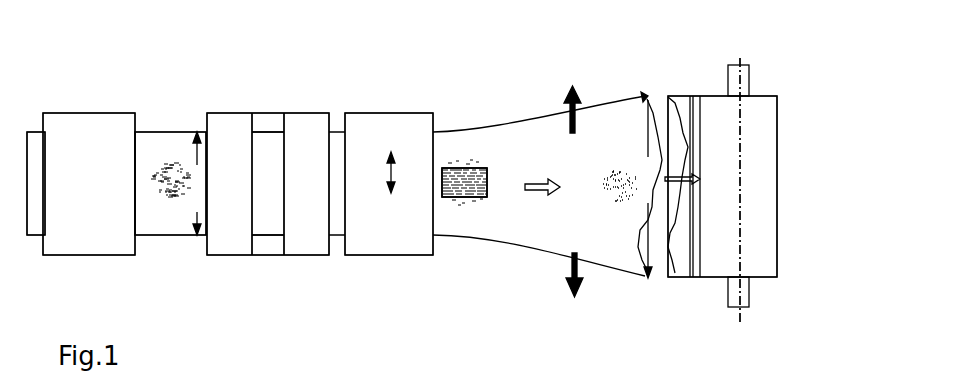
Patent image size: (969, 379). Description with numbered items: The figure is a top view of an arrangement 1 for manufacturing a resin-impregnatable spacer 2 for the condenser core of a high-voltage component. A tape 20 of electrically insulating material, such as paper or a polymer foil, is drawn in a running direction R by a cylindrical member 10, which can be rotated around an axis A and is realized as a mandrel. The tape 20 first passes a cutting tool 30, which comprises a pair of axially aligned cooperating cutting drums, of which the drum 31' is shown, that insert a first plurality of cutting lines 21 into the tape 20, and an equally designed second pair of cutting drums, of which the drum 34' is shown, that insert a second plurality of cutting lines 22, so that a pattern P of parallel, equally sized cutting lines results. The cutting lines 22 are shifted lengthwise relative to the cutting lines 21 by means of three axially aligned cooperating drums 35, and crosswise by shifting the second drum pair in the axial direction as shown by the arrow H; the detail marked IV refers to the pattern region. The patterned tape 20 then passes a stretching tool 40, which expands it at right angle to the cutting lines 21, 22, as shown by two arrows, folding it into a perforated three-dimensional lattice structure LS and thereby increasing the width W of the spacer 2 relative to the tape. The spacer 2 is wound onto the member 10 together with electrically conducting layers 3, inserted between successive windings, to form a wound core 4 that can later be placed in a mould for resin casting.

The arrangement 1 is at (335, 32).
The cutting tool 30 is at (294, 60).
The cutting drum 31' is at (81, 218).
The tape 20 is at (149, 223).
The cutting lines 21 is at (165, 190).
The drums 35 is at (287, 230).
The cutting drum 34' is at (389, 216).
The cutting lines 22 is at (480, 193).
The stretching tool 40 is at (570, 133).
The spacer 2 is at (683, 260).
The electrically conducting layers 3 is at (696, 233).
The wound core 4 is at (714, 253).
The cylindrical member 10 is at (745, 287).
The arrow H is at (388, 152).
The pattern P is at (455, 168).
The detail IV is at (488, 168).
The running direction R is at (547, 183).
The lattice structure LS is at (620, 177).
The axis A is at (738, 110).
The width W is at (421, 183).